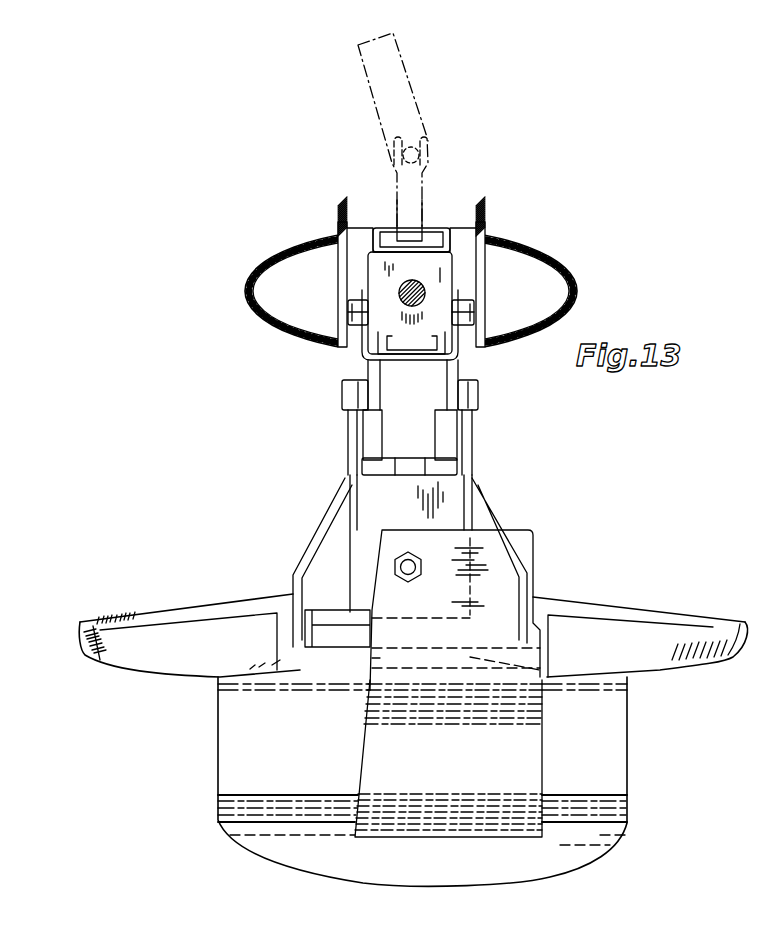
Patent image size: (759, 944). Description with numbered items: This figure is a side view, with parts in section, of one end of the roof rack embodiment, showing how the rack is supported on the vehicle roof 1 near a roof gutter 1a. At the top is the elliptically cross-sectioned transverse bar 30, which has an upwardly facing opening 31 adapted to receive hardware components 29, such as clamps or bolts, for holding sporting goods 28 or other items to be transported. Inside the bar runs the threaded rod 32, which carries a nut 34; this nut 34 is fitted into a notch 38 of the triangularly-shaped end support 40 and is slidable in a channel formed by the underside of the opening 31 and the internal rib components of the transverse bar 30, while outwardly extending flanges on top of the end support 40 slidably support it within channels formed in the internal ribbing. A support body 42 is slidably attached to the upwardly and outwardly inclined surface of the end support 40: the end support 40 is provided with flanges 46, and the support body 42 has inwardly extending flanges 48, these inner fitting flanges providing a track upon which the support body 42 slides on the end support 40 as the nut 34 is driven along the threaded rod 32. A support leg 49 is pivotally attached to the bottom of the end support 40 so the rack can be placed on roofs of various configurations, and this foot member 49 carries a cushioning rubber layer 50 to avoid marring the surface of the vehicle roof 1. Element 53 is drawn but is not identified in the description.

The vehicle roof 1 is at (237, 738).
The roof gutter 1a is at (228, 807).
The sporting goods 28 is at (393, 88).
The hardware components 29 is at (407, 193).
The transverse bar 30 is at (550, 250).
The upwardly facing opening 31 is at (427, 222).
The threaded rod 32 is at (427, 288).
The nut 34 is at (446, 262).
The notch 38 is at (460, 334).
The end support 40 is at (366, 371).
The support body 42 is at (437, 493).
The flange 46 is at (437, 465).
The inwardly extending flange 48 is at (368, 438).
The support leg 49 is at (423, 658).
The cushioning rubber layer 50 is at (90, 622).
The guide rollers 53 is at (348, 309).